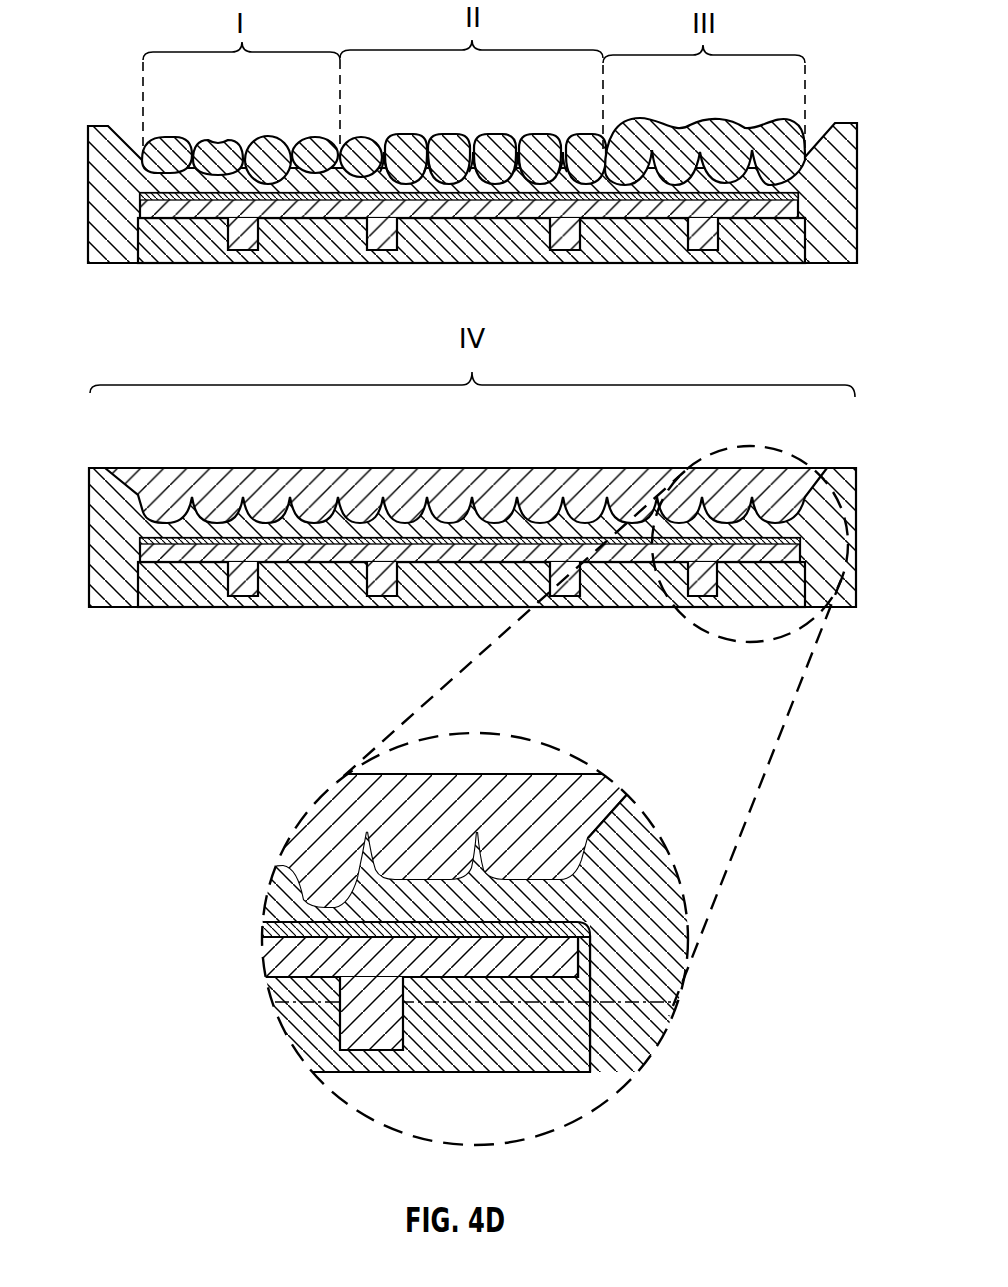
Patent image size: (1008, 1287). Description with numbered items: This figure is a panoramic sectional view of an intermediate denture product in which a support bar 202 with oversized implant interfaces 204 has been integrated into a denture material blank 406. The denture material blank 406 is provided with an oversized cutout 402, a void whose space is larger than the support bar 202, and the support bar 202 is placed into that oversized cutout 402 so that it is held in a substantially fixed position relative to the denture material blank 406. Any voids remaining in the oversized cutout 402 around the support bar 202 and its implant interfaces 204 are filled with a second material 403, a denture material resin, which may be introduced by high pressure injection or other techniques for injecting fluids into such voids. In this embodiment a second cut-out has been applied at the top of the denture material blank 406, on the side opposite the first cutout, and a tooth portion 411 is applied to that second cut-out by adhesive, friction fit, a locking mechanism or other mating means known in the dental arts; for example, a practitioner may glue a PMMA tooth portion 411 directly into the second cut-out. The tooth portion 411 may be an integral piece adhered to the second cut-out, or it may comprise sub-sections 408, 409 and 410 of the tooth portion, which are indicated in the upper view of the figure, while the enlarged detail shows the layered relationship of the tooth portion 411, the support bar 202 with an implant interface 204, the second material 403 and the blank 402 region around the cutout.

The support bar 202 is at (537, 213).
The oversized implant interfaces 204 is at (380, 255).
The oversized cutout 402 is at (660, 1015).
The second material 403 is at (181, 246).
The denture material blank 406 is at (140, 152).
The sub-section of the tooth portion 408 is at (190, 150).
The sub-section of the tooth portion 409 is at (495, 150).
The sub-section of the tooth portion 410 is at (680, 130).
The tooth portion 411 is at (203, 481).